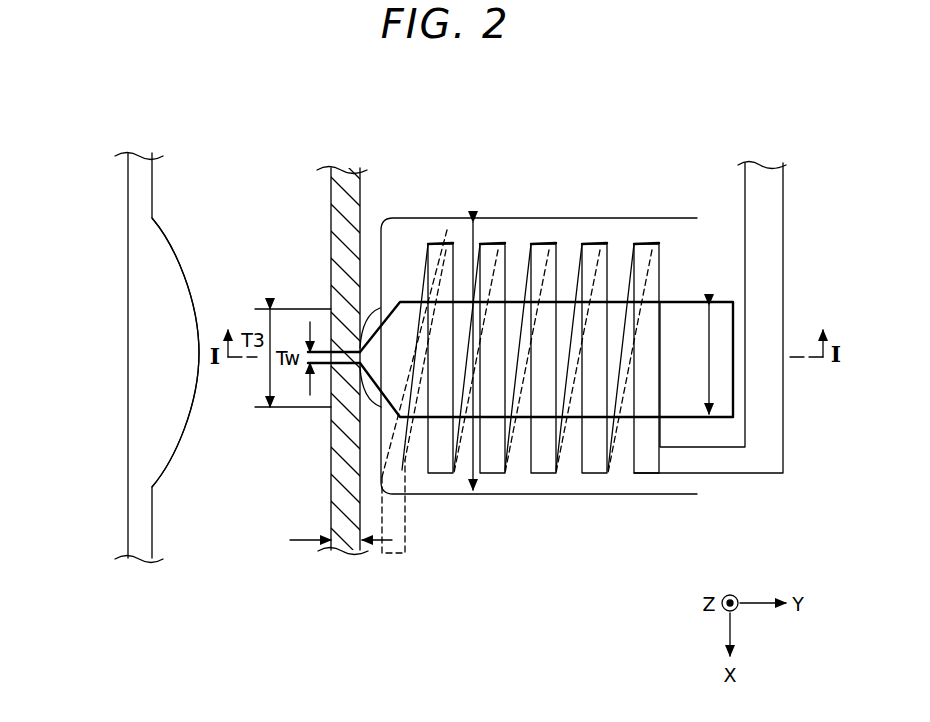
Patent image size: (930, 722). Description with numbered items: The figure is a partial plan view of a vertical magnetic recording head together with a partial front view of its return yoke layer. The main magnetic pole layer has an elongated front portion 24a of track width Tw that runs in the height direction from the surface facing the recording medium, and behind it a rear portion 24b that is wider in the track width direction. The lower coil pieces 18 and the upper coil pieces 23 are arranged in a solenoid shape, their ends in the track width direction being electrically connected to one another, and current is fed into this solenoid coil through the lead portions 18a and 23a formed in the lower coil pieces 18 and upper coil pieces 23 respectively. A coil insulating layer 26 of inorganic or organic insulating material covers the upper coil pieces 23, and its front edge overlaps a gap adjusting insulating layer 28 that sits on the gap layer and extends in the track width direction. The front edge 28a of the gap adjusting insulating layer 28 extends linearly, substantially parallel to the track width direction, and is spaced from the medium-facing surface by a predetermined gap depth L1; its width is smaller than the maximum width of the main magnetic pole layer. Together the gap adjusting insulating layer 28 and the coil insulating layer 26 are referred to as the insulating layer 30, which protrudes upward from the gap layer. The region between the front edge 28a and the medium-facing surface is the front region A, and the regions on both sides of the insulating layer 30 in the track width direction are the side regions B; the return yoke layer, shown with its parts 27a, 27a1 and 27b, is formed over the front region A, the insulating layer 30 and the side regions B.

The lower coil pieces 18 is at (640, 247).
The lead portion 18a is at (407, 541).
The upper coil pieces 23 is at (656, 465).
The lead portion 23a is at (768, 458).
The front portion 24a is at (373, 308).
The rear portion 24b is at (692, 400).
The coil insulating layer 26 is at (422, 232).
The lens 27a is at (128, 313).
The lens convex surface 27a1 is at (160, 417).
The lens flange 27b is at (128, 176).
The gap adjusting insulating layer 28 is at (372, 310).
The front edge 28a is at (343, 260).
The insulating layer 30 is at (465, 97).
The front region A is at (340, 478).
The side regions B is at (632, 190).
The gap depth L1 is at (345, 541).